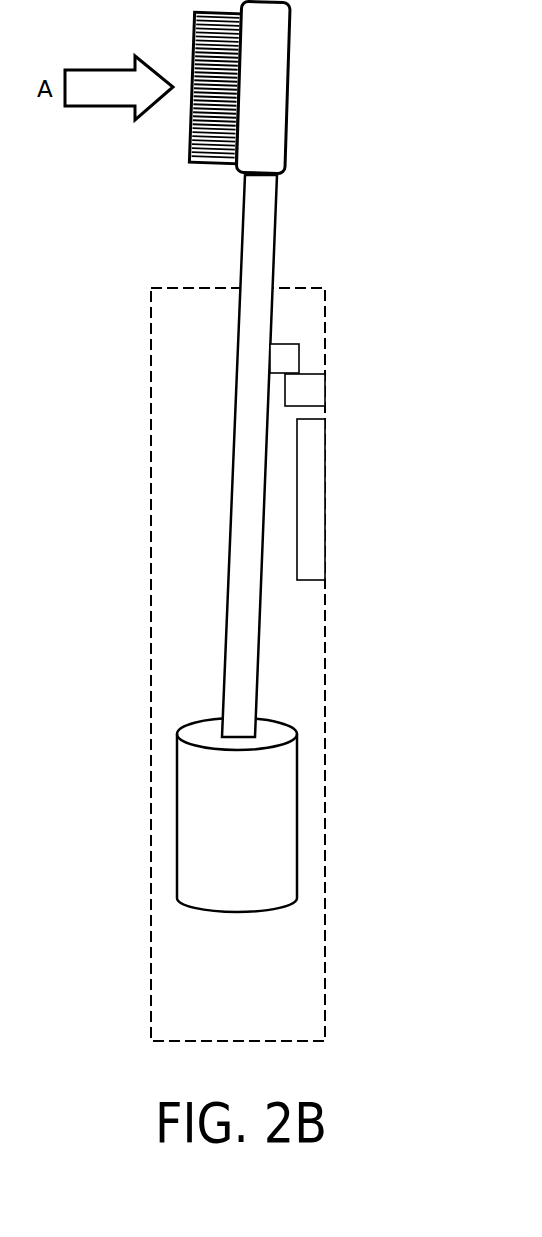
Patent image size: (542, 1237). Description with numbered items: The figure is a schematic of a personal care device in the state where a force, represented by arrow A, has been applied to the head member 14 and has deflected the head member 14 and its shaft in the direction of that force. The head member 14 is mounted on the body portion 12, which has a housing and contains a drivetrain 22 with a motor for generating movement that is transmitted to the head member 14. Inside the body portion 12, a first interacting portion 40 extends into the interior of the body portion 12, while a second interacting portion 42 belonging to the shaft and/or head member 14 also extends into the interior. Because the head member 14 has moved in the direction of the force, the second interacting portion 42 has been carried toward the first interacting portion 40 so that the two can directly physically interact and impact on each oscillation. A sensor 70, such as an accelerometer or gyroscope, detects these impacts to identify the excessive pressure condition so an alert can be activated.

The head member 14 is at (287, 126).
The body portion 12 is at (325, 655).
The drivetrain 22 is at (297, 815).
The second interacting portion 42 is at (299, 356).
The first interacting portion 40 is at (325, 388).
The sensor 70 is at (325, 492).